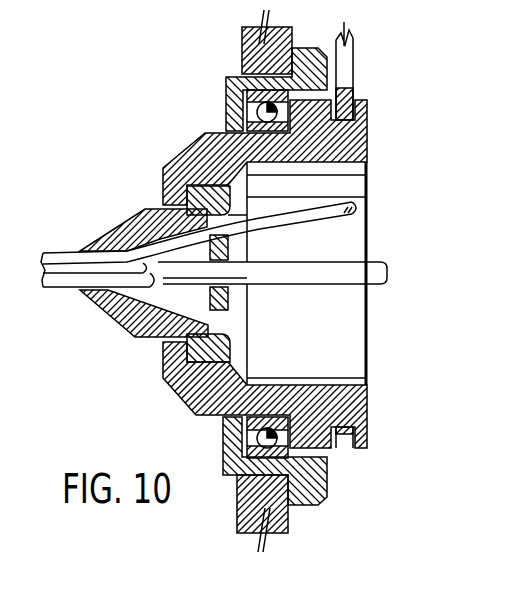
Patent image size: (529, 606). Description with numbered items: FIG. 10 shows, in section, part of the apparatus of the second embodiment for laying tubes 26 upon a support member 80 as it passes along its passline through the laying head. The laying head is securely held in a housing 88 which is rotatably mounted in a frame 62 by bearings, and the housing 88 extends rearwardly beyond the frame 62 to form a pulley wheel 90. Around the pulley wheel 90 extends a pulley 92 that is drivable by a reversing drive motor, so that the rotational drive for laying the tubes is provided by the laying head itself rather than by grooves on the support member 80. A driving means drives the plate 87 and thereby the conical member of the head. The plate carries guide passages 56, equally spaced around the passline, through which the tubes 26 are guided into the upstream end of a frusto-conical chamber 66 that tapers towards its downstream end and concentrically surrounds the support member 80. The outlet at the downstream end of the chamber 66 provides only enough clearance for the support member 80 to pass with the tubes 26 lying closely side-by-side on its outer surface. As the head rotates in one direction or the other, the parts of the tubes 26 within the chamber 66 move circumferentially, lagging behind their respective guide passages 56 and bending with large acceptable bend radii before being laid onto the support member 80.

The tubes 26 is at (143, 258).
The guide passages 56 is at (233, 200).
The frame 62 is at (242, 53).
The frusto-conical chamber 66 is at (203, 313).
The support member 80 is at (352, 265).
The plate 87 is at (247, 249).
The housing 88 is at (178, 156).
The pulley wheel 90 is at (367, 122).
The pulley 92 is at (343, 60).